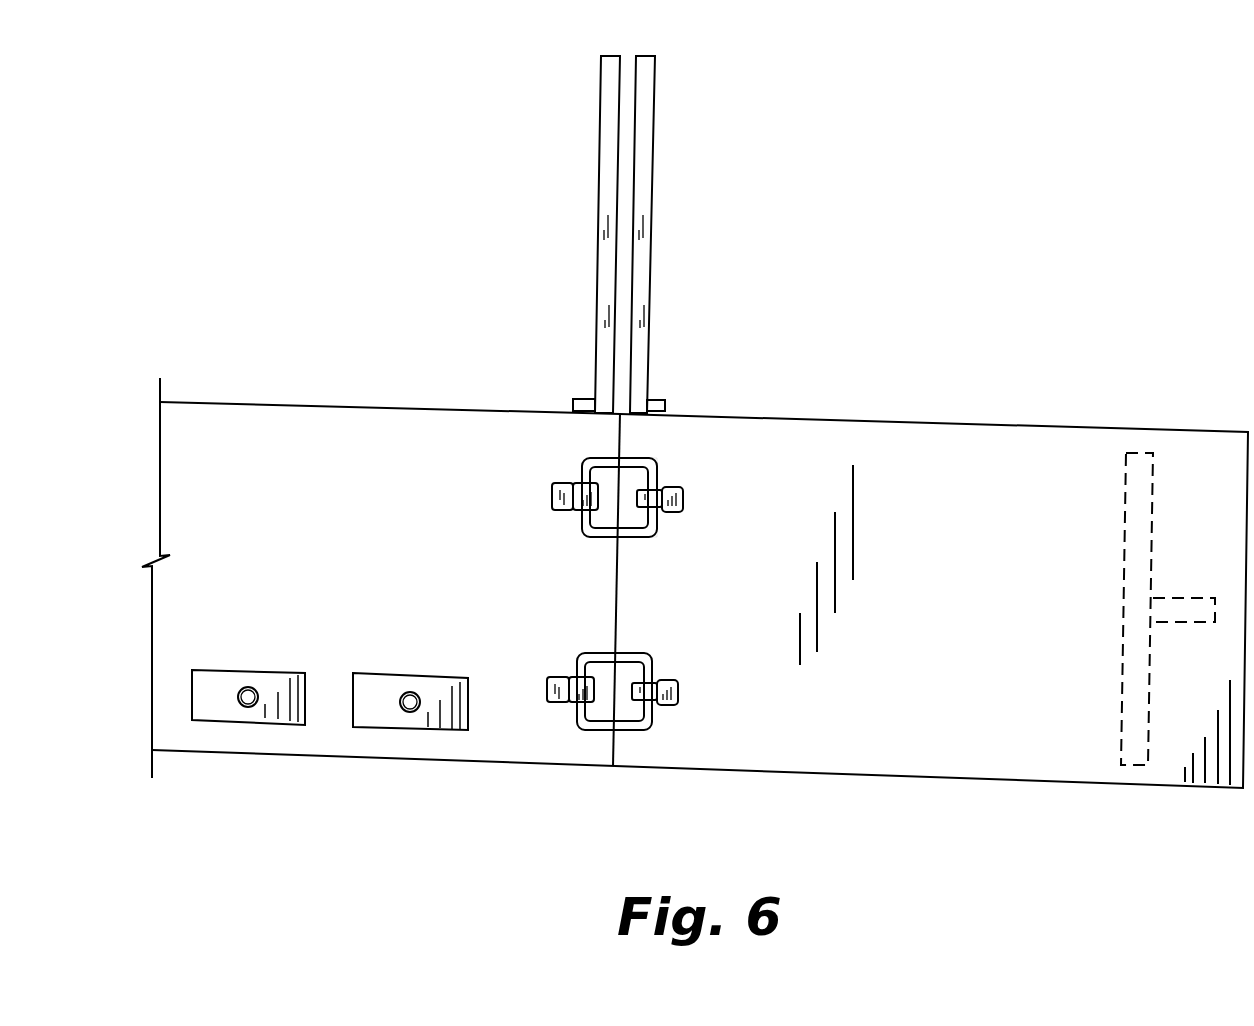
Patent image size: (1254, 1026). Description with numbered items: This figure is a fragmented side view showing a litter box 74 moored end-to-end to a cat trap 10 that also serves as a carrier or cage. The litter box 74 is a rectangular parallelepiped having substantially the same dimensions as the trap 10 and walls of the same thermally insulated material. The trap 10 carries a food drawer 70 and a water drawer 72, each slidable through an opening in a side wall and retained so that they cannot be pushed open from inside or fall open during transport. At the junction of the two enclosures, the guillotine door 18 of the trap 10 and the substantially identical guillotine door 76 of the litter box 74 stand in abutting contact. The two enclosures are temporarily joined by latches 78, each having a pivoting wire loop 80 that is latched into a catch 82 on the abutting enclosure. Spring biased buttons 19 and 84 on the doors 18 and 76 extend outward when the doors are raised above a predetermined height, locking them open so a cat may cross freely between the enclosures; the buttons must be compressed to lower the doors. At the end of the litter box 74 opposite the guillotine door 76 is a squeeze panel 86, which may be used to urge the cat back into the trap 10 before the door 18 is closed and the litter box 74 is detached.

The cat trap 10 is at (331, 366).
The litter box 74 is at (933, 378).
The guillotine door 18 is at (601, 112).
The guillotine door 76 is at (655, 183).
The spring biased button 19 is at (578, 398).
The spring biased button 84 is at (665, 400).
The latch 78 is at (573, 538).
The pivoting wire loop 80 is at (637, 538).
The catch 82 is at (683, 489).
The food drawer 70 is at (255, 670).
The water drawer 72 is at (405, 676).
The squeeze panel 86 is at (1122, 635).